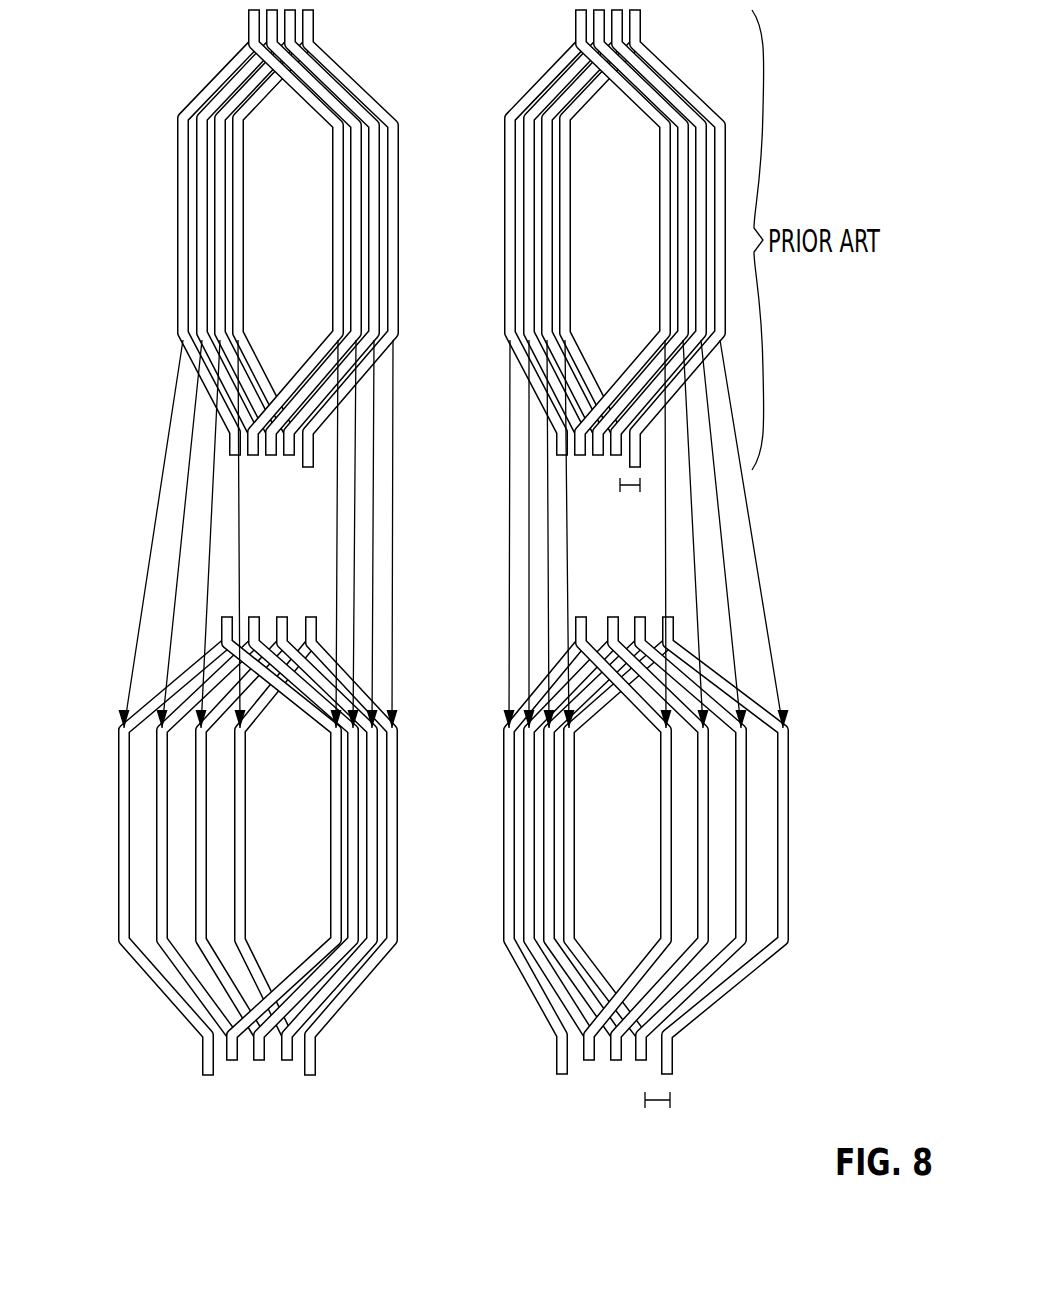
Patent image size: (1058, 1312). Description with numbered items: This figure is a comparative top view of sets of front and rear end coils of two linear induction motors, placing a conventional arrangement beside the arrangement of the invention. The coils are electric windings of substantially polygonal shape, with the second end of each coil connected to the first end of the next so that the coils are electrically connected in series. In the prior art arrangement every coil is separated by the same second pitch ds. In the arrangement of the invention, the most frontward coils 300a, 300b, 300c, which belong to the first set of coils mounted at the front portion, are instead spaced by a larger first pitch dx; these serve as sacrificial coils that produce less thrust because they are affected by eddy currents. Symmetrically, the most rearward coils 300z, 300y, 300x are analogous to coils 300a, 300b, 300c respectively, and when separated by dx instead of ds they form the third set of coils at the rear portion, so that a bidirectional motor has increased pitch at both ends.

The first frontward coil 300a is at (117, 790).
The second frontward coil 300b is at (156, 815).
The third frontward coil 300c is at (196, 835).
The rearward coil 300x is at (710, 878).
The rearward coil 300y is at (748, 814).
The last rearward coil 300z is at (790, 755).
The second pitch ds is at (640, 487).
The first pitch dx is at (670, 1102).